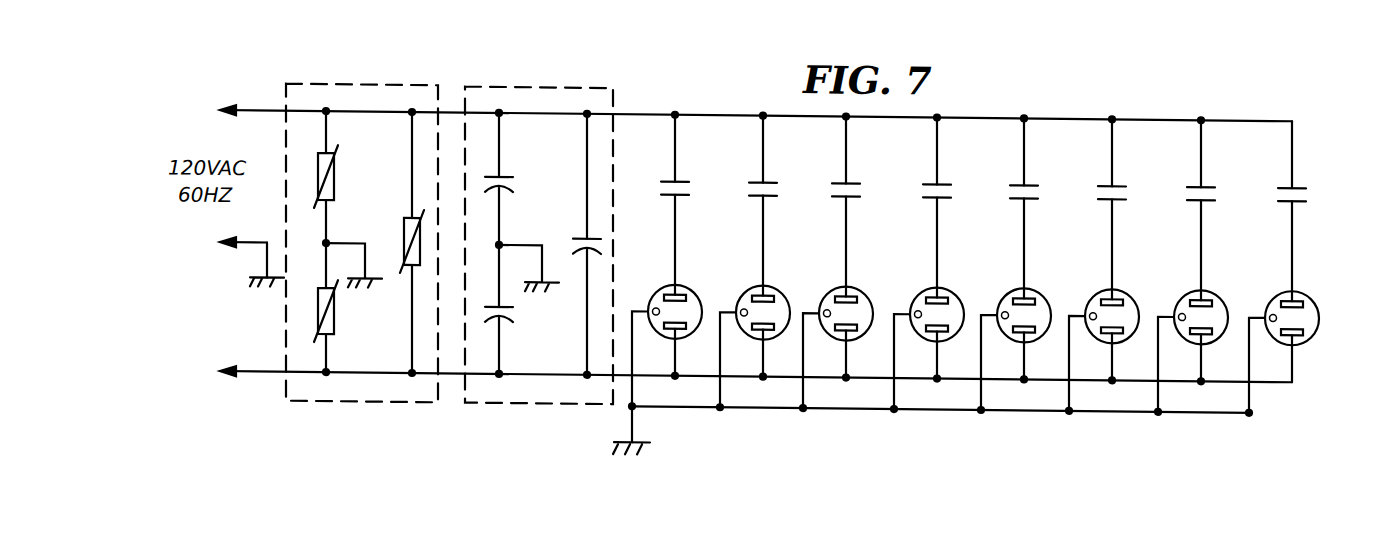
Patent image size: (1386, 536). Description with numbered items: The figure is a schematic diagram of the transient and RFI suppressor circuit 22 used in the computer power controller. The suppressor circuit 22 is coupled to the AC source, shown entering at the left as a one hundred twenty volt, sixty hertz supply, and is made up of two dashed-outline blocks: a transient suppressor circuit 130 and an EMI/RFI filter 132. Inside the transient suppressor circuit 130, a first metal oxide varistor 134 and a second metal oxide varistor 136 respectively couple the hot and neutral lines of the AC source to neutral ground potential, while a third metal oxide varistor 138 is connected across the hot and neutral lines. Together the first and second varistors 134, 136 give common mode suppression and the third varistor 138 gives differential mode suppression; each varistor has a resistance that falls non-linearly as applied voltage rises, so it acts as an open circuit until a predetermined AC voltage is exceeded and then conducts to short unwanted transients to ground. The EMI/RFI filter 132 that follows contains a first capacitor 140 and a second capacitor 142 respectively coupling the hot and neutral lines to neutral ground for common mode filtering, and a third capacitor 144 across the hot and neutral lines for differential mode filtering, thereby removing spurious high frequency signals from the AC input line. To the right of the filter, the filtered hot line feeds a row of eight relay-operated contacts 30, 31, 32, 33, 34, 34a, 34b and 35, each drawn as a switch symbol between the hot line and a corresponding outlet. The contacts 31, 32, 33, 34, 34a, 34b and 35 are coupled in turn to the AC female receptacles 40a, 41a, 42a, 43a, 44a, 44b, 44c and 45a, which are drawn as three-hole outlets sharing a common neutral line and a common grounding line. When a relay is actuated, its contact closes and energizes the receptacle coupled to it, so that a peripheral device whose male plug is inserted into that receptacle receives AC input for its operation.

The transient and RFI suppressor circuit 22 is at (357, 430).
The transient suppressor circuit 130 is at (338, 84).
The EMI/RFI filter 132 is at (526, 86).
The first metal oxide varistor 134 is at (318, 163).
The second metal oxide varistor 136 is at (316, 297).
The third metal oxide varistor 138 is at (404, 228).
The first capacitor 140 is at (502, 175).
The second capacitor 142 is at (503, 316).
The third capacitor 144 is at (587, 236).
The contact 30 is at (658, 178).
The contact 31 is at (746, 178).
The contact 32 is at (829, 178).
The contact 33 is at (920, 178).
The contact 34 is at (1007, 178).
The contact 34a is at (1095, 178).
The contact 34b is at (1184, 178).
The contact 35 is at (1275, 178).
The AC female receptacle 40a is at (685, 282).
The AC female receptacle 41a is at (773, 282).
The AC female receptacle 42a is at (856, 282).
The AC female receptacle 43a is at (947, 282).
The AC female receptacle 44a is at (1034, 282).
The AC female receptacle 44b is at (1122, 282).
The AC female receptacle 44c is at (1211, 282).
The AC female receptacle 45a is at (1302, 282).